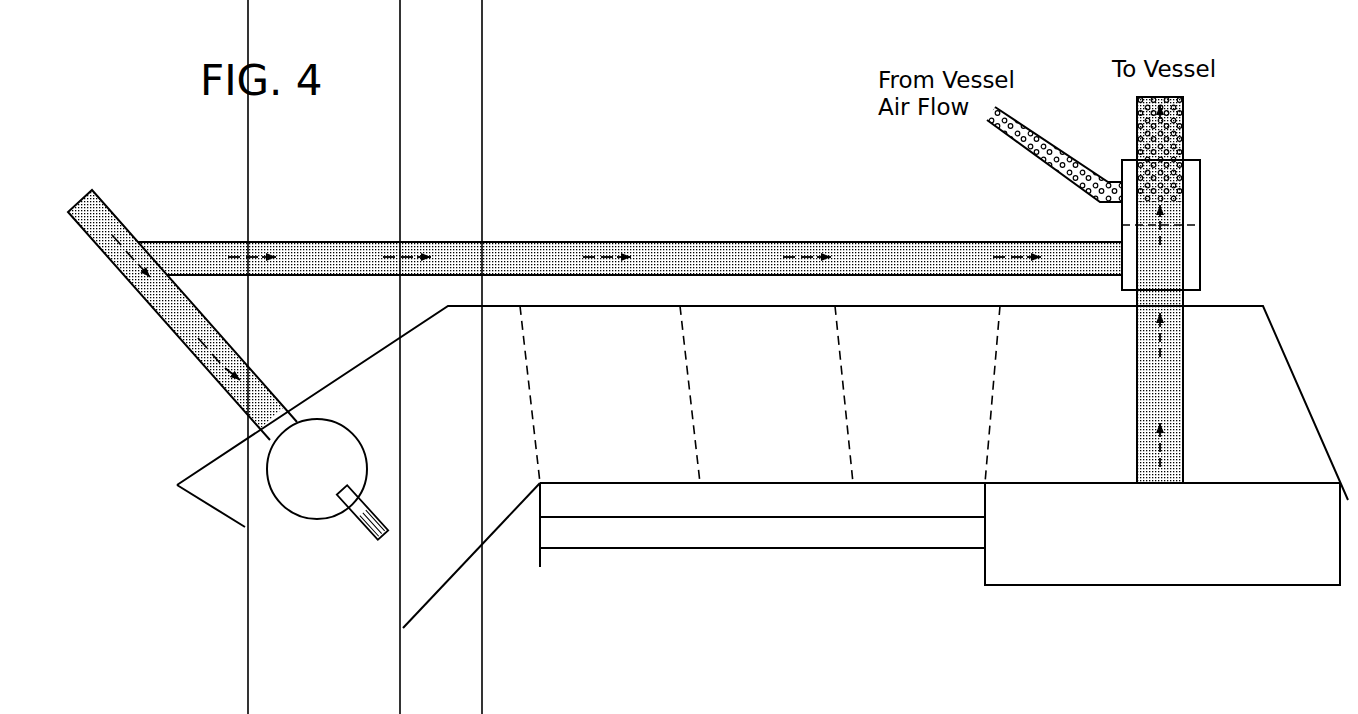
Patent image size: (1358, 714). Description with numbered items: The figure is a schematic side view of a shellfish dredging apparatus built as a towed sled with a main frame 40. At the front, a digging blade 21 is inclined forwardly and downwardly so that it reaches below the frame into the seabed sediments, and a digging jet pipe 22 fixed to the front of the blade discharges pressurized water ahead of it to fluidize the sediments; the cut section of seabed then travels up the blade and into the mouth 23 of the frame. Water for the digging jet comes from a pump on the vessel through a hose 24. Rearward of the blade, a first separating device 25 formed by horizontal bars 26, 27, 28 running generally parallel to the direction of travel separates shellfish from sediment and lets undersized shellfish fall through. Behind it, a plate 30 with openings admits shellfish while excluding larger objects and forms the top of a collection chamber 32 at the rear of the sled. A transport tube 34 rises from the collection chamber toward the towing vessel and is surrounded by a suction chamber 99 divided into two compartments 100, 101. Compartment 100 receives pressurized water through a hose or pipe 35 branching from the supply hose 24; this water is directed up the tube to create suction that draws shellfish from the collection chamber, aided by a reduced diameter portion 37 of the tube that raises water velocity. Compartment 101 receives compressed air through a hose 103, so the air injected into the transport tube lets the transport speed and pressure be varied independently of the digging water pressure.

The digging blade 21 is at (443, 591).
The digging jet pipe 22 is at (357, 520).
The mouth 23 is at (415, 503).
The hose 24 is at (108, 260).
The first separating device 25 is at (592, 528).
The horizontal bar 26 is at (813, 483).
The horizontal bar 27 is at (752, 517).
The horizontal bar 28 is at (697, 550).
The plate 30 is at (1253, 483).
The collection chamber 32 is at (1125, 562).
The transport tube 34 is at (1213, 200).
The hose or pipe 35 is at (752, 252).
The reduced diameter portion 37 is at (1183, 365).
The main frame 40 is at (485, 305).
The suction chamber 99 is at (1225, 200).
The compartment 100 is at (1200, 250).
The compartment 101 is at (1202, 168).
The hose 103 is at (1045, 137).